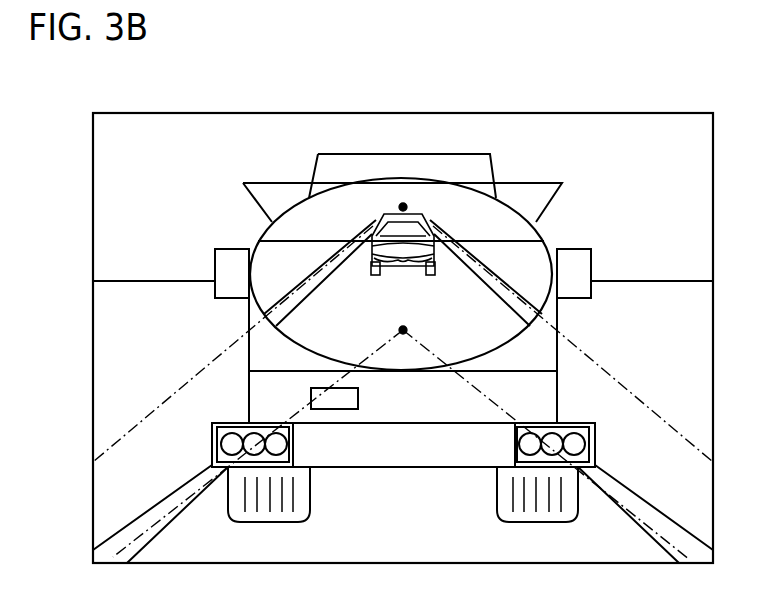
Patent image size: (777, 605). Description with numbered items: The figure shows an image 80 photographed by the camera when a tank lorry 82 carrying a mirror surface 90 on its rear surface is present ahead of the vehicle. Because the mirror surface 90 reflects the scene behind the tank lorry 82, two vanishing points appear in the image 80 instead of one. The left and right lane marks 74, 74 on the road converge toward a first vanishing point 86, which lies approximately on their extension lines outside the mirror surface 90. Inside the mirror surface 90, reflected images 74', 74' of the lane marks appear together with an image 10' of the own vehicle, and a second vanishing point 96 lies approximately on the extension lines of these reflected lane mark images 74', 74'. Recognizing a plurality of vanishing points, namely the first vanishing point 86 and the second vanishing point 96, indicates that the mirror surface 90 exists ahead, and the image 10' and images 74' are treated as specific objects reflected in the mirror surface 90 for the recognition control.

The image 80 is at (512, 112).
The tank lorry 82 is at (265, 229).
The mirror surface 90 is at (297, 223).
The second vanishing point 96 is at (403, 203).
The image of the vehicle 10' is at (424, 234).
The images of the lane marks 74' is at (403, 341).
The first vanishing point 86 is at (407, 323).
The lane marks 74 is at (403, 446).